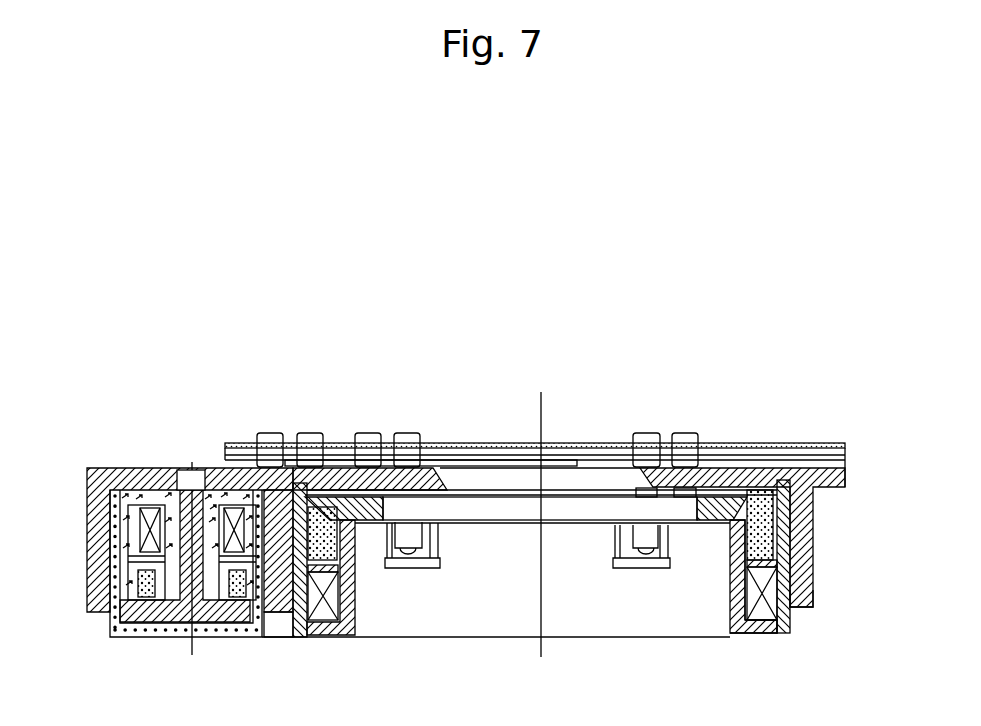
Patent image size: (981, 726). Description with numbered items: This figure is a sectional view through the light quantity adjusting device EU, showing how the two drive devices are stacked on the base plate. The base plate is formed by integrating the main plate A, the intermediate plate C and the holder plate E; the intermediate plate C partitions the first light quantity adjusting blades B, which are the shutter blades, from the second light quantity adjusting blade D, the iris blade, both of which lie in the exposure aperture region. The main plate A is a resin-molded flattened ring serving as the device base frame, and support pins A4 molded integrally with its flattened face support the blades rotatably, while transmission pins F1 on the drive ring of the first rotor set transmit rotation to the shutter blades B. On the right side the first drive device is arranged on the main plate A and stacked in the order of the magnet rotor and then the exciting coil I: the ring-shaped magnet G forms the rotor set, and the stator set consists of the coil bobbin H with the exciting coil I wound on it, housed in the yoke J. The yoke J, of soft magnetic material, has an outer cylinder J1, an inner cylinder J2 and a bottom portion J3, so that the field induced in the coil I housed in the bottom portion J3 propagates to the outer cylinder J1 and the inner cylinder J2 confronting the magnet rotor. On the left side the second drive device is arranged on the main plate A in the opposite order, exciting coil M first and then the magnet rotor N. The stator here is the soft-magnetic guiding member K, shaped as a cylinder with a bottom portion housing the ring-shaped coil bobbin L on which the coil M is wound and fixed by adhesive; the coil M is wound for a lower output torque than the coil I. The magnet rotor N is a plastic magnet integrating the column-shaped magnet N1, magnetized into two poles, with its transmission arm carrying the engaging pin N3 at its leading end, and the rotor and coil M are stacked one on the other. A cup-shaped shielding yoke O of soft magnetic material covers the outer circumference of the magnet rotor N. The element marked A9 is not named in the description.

The light quantity adjusting device EU is at (822, 342).
The guiding member K is at (147, 470).
The shielding yoke O is at (100, 631).
The magnet rotor N is at (196, 614).
The magnet N1 is at (147, 613).
The engaging pin N3 is at (268, 433).
The exciting coil M is at (133, 555).
The coil bobbin L is at (130, 568).
The magnet G is at (802, 537).
The main plate A is at (842, 478).
The intermediate plate C is at (815, 438).
The holder plate E is at (765, 438).
The first light quantity adjusting blades B is at (485, 462).
The second light quantity adjusting blade D is at (590, 462).
The terminal pin A9 is at (308, 433).
The support pins A4 is at (368, 433).
The transmission pins F1 is at (410, 433).
The coil bobbin H is at (772, 560).
The exciting coil I is at (778, 592).
The yoke J is at (747, 635).
The outer cylinder J1 is at (790, 612).
The inner cylinder J2 is at (728, 612).
The bottom portion J3 is at (788, 637).